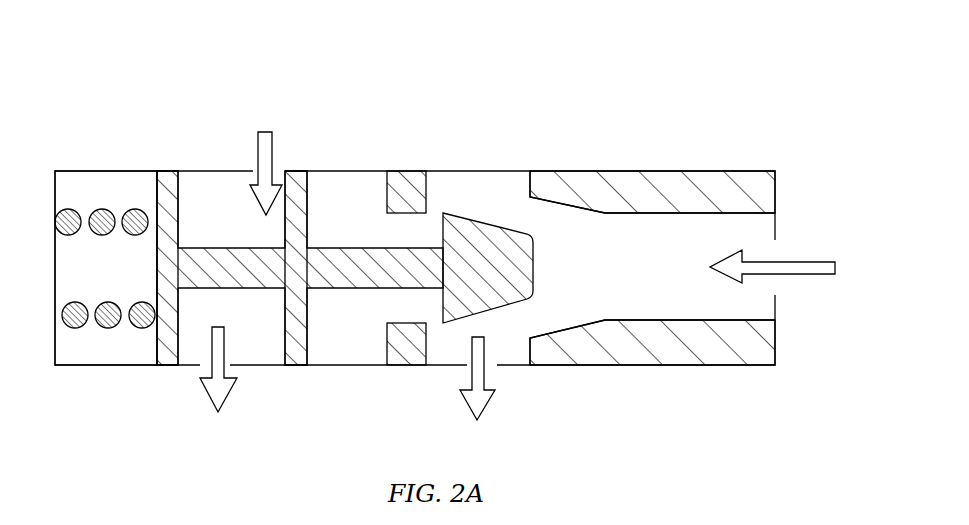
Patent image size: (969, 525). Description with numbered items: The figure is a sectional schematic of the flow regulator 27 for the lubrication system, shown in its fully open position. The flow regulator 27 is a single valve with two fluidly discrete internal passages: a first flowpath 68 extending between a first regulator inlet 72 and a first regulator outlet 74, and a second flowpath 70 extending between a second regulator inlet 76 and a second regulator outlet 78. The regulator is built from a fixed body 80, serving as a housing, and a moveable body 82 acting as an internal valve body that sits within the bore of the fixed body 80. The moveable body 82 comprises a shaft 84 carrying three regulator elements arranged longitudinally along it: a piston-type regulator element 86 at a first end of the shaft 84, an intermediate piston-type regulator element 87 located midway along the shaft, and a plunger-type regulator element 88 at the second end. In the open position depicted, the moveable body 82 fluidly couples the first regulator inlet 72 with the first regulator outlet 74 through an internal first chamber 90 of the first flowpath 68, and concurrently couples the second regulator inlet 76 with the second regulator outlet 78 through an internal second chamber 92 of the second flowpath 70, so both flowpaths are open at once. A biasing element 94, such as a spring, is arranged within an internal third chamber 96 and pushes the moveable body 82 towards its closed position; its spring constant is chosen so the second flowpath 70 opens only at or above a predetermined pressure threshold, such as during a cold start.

The flow regulator 27 is at (563, 76).
The first flowpath 68 is at (718, 236).
The first chamber 90 is at (652, 268).
The second flowpath 70 is at (200, 186).
The second chamber 92 is at (231, 209).
The first regulator inlet 72 is at (772, 253).
The first regulator outlet 74 is at (495, 367).
The second regulator inlet 76 is at (282, 170).
The second regulator outlet 78 is at (200, 366).
The fixed body 80 is at (625, 168).
The moveable body 82 is at (263, 292).
The shaft 84 is at (375, 247).
The regulator element 86 is at (168, 170).
The regulator element 87 is at (302, 170).
The regulator element 88 is at (533, 258).
The biasing element 94 is at (101, 209).
The third chamber 96 is at (93, 262).